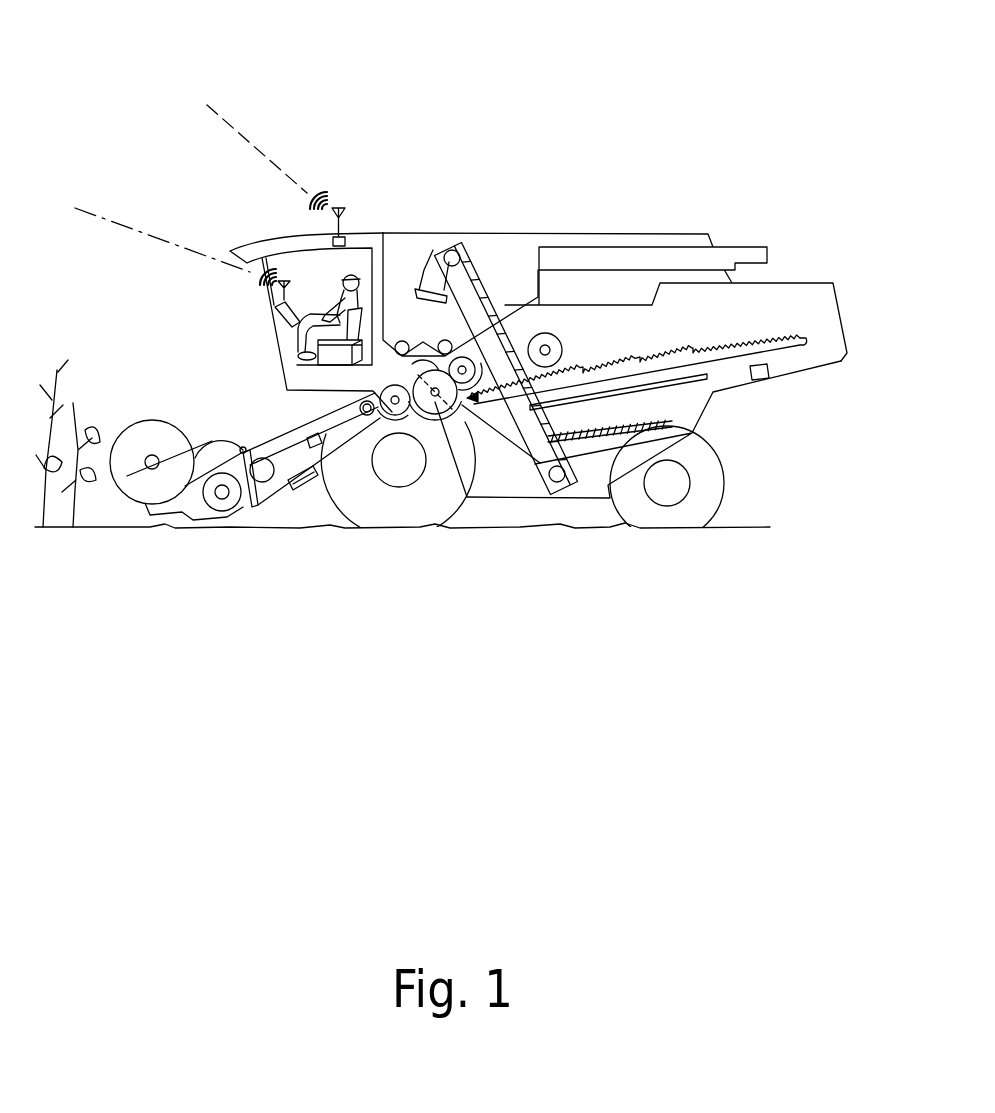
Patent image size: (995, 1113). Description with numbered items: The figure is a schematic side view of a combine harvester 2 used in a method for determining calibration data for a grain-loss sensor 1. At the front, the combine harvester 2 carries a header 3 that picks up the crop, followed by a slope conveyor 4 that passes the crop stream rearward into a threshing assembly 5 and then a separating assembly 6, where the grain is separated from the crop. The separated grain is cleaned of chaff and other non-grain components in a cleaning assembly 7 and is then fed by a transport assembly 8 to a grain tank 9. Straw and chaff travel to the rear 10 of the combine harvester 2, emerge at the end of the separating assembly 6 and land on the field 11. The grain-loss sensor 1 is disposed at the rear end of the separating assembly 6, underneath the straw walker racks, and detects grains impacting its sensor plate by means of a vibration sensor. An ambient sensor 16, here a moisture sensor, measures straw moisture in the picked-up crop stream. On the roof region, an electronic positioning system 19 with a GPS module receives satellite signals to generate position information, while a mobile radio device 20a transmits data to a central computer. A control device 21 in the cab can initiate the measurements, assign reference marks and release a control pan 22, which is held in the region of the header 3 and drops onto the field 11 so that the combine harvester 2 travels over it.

The grain-loss sensor 1 is at (755, 382).
The combine harvester 2 is at (665, 135).
The header 3 is at (133, 442).
The slope conveyor 4 is at (292, 497).
The threshing assembly 5 is at (428, 415).
The separating assembly 6 is at (720, 345).
The cleaning assembly 7 is at (590, 437).
The transport assembly 8 is at (531, 460).
The grain tank 9 is at (405, 248).
The rear 10 is at (803, 378).
The field 11 is at (773, 607).
The ambient sensor 16 is at (297, 437).
The electronic positioning system 19 is at (347, 237).
The mobile radio device 20a is at (250, 280).
The control device 21 is at (273, 322).
The control pan 22 is at (295, 490).